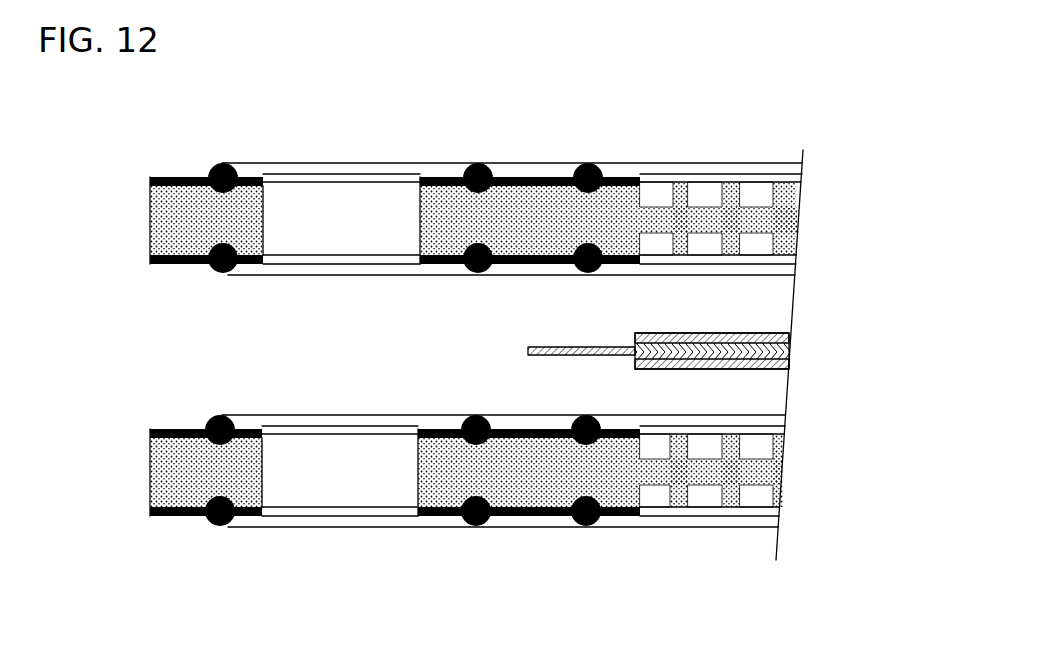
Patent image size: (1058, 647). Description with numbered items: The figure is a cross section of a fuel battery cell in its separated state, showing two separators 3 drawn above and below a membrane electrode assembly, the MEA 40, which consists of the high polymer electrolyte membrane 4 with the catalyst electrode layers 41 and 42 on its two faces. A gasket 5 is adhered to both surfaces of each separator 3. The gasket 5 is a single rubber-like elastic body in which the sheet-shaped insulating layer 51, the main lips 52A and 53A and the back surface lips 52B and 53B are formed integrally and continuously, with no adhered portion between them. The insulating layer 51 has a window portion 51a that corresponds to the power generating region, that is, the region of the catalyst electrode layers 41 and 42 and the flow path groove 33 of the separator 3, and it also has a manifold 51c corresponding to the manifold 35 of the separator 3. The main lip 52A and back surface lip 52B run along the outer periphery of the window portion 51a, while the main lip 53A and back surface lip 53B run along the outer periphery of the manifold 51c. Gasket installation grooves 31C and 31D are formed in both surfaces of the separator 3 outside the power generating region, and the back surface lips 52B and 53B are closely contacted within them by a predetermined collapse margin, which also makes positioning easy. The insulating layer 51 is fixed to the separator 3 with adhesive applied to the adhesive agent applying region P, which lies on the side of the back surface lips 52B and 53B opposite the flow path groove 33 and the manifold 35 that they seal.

The separator 3 is at (140, 221).
The high polymer electrolyte membrane 4 is at (713, 364).
The gasket 5 is at (265, 349).
The gasket installation groove 31C is at (653, 195).
The gasket installation groove 31D is at (265, 243).
The flow path groove 33 is at (758, 247).
The manifold 35 is at (367, 230).
The MEA 40 is at (812, 357).
The catalyst electrode layer 41 is at (722, 334).
The catalyst electrode layer 42 is at (733, 370).
The insulating layer 51 is at (549, 333).
The window portion 51a is at (641, 186).
The manifold 51c is at (357, 165).
The main lip 52A is at (589, 163).
The back surface lip 52B is at (551, 177).
The main lip 53A is at (222, 164).
The back surface lip 53B is at (150, 184).
The adhesive agent applying region P is at (200, 272).